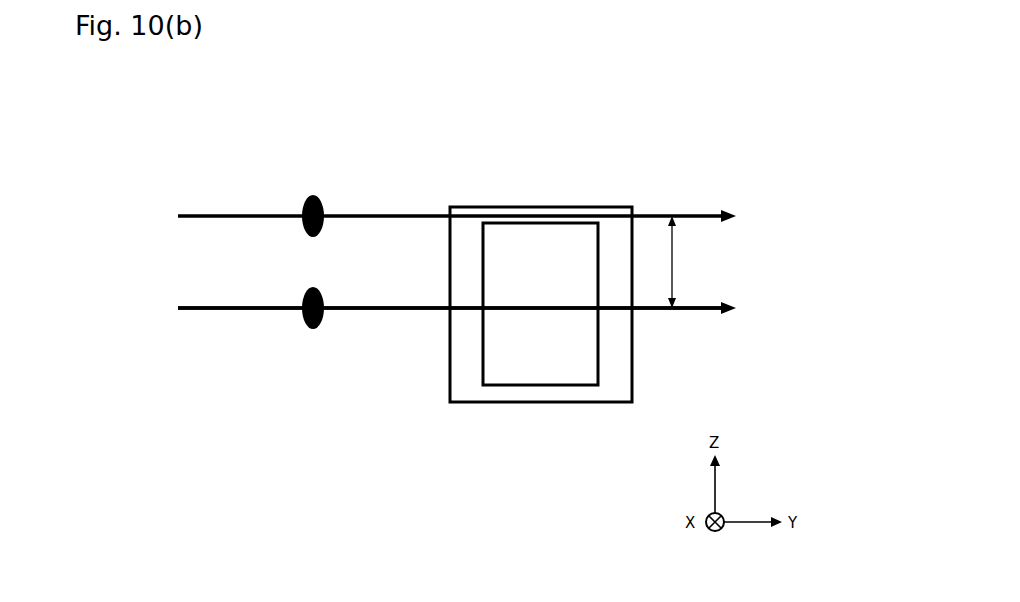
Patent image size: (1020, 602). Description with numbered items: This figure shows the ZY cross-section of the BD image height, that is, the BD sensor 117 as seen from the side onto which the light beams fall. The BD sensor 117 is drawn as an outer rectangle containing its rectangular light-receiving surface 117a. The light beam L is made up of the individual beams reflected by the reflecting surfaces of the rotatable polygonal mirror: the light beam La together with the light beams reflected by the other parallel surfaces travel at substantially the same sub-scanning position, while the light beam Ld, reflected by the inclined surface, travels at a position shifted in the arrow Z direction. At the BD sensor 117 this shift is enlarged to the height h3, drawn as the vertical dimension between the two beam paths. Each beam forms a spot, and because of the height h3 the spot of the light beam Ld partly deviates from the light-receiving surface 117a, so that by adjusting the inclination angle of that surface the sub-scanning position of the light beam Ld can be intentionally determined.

The BD sensor 117 is at (498, 205).
The light-receiving surface 117a is at (558, 237).
The height h3 is at (676, 266).
The light beam L is at (90, 195).
The light beam Ld is at (192, 216).
The light beam La is at (203, 310).